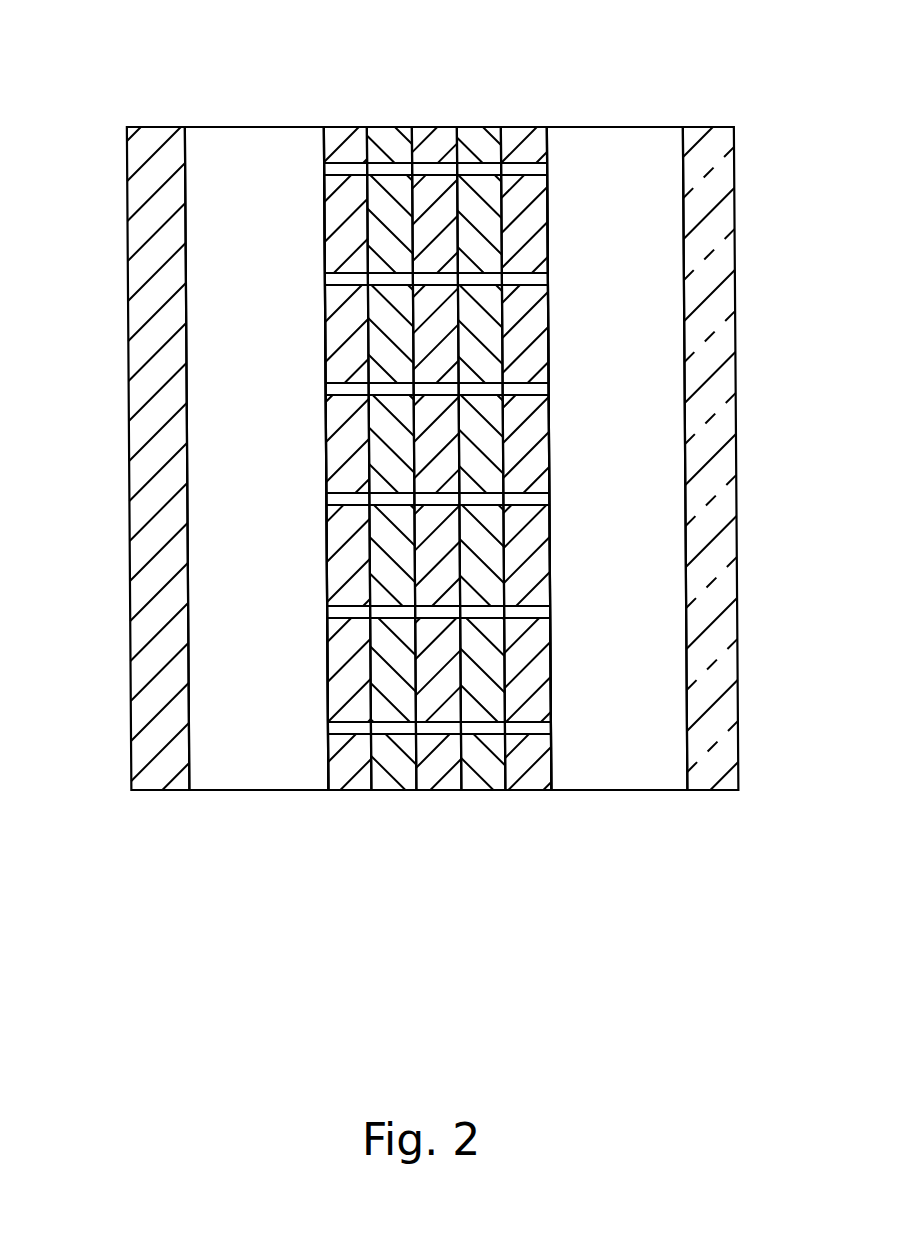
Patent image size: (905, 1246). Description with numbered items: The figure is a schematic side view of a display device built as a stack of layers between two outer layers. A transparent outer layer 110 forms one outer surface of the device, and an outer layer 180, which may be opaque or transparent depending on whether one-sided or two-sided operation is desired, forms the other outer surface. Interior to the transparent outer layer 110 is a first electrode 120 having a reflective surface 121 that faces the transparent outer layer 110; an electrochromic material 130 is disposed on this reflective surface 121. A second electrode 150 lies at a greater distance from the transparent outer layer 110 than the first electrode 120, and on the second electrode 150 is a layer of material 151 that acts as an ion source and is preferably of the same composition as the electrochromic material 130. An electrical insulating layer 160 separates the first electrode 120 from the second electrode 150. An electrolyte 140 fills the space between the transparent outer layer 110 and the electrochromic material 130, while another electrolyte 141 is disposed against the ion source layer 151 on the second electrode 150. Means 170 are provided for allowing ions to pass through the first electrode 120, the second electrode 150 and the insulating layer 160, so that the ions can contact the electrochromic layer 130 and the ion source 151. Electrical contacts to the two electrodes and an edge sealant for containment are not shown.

The transparent outer layer 110 is at (710, 768).
The first electrode 120 is at (477, 770).
The reflective surface 121 is at (505, 775).
The electrochromic material 130 is at (522, 145).
The electrolyte 140 is at (625, 155).
The electrolyte 141 is at (233, 158).
The second electrode 150 is at (393, 763).
The ion source layer 151 is at (353, 765).
The electrical insulating layer 160 is at (438, 762).
The means for allowing ions to pass 170 is at (548, 497).
The outer layer 180 is at (160, 772).